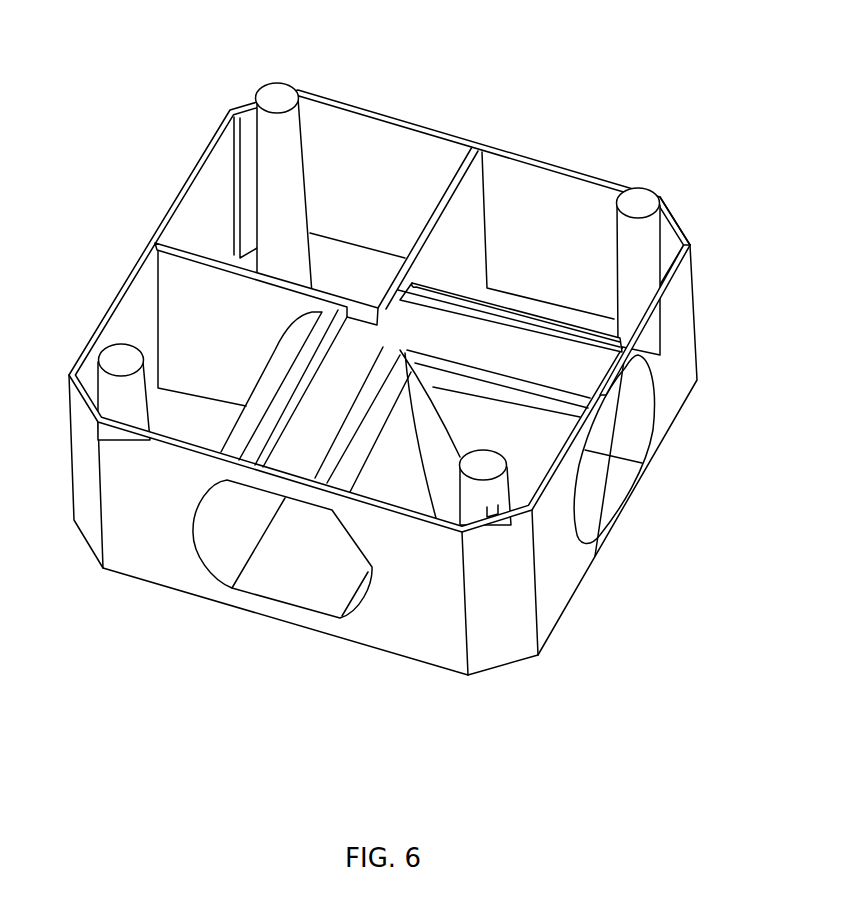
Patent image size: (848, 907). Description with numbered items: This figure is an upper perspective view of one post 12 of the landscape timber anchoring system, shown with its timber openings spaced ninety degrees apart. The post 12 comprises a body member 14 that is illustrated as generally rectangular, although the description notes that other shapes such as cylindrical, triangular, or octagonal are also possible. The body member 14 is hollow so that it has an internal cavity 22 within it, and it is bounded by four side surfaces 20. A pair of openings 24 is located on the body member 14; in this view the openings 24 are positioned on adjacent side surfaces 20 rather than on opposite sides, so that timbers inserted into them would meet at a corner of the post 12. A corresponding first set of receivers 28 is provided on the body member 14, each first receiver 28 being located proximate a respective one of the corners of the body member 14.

The post 12 is at (395, 350).
The body member 14 is at (683, 227).
The side surfaces 20 is at (395, 460).
The internal cavity 22 is at (345, 137).
The openings 24 is at (613, 475).
The first receivers 28 is at (272, 95).